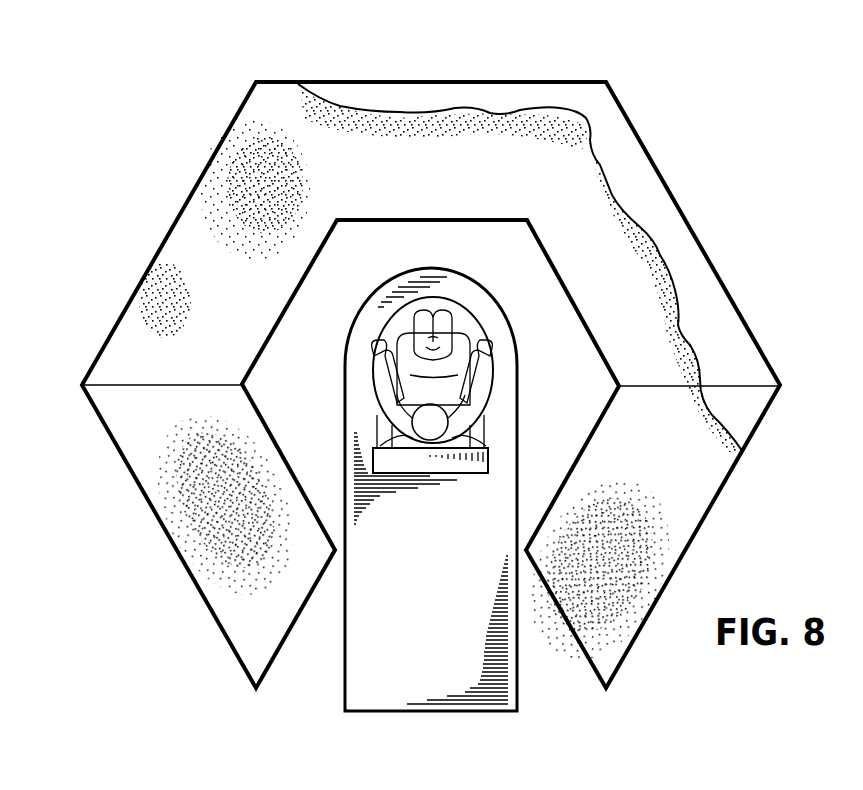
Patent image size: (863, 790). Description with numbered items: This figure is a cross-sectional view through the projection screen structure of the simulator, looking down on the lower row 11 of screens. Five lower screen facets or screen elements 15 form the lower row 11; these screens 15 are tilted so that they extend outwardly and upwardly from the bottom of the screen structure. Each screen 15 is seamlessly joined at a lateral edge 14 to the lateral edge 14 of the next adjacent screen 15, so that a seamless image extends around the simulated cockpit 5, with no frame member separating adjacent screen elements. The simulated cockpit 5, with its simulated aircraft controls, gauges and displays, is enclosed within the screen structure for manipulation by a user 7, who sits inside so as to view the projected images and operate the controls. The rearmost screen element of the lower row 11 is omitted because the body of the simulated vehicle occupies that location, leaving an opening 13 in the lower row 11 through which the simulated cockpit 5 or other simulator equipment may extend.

The lower row 11 is at (438, 393).
The opening 13 is at (552, 676).
The lateral edge 14 is at (275, 102).
The lower screen facets 15 is at (155, 270).
The simulated cockpit 5 is at (482, 425).
The user 7 is at (495, 355).